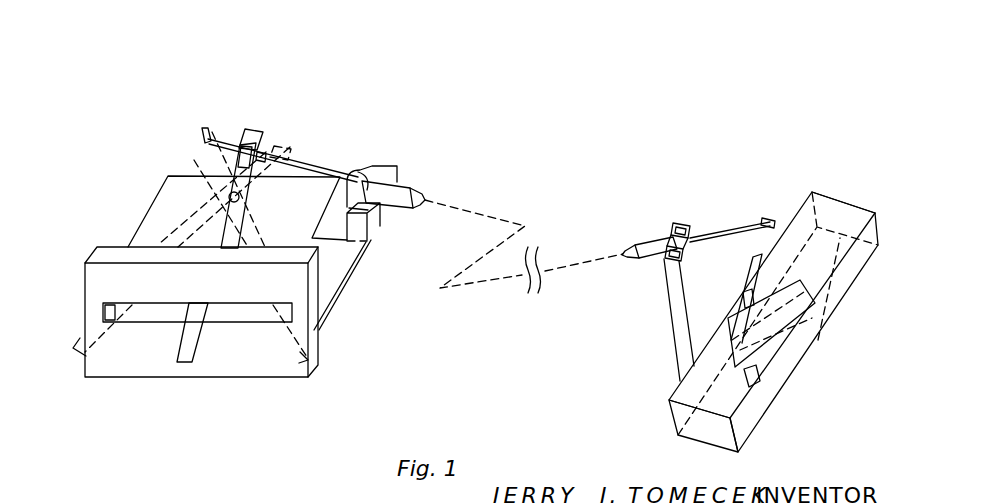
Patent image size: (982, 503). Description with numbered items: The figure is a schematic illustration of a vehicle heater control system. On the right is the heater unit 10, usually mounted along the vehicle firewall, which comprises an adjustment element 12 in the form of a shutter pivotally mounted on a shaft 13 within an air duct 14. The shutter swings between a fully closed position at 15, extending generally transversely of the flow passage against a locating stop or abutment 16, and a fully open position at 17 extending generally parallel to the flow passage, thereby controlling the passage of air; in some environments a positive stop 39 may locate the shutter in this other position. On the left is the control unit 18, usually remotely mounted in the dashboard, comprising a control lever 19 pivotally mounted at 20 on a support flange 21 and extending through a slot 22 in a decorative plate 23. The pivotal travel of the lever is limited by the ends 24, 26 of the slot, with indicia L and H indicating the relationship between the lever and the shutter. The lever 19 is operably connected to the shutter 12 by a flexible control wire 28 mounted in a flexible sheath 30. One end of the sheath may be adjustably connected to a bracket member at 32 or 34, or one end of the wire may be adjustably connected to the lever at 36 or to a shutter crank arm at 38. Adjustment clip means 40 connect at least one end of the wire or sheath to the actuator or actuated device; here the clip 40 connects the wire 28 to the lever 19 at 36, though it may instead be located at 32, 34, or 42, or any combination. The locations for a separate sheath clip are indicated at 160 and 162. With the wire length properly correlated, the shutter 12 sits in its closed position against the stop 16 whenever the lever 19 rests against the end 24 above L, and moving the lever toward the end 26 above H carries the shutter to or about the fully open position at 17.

The heater unit 10 is at (676, 373).
The adjustment element 12 is at (759, 356).
The shaft 13 is at (753, 262).
The air duct 14 is at (710, 428).
The fully closed position 15 is at (825, 318).
The locating stop 16 is at (733, 304).
The fully open position 17 is at (855, 214).
The control unit 18 is at (320, 330).
The control lever 19 is at (187, 357).
The pivot 20 is at (228, 198).
The support flange 21 is at (146, 212).
The slot 22 is at (217, 320).
The decorative plate 23 is at (115, 280).
The slot end 24 is at (114, 320).
The slot end 26 is at (291, 310).
The flexible control wire 28 is at (322, 163).
The flexible sheath 30 is at (412, 186).
The sheath connection point 32 is at (386, 164).
The sheath connection point 34 is at (680, 221).
The wire connection point 36 is at (262, 138).
The shutter crank arm connection point 38 is at (771, 212).
The positive stop 39 is at (754, 385).
The adjustment clip means 40 is at (243, 145).
The alternative clip location 42 is at (754, 219).
The sheath clip location 160 is at (383, 206).
The sheath clip location 162 is at (665, 256).